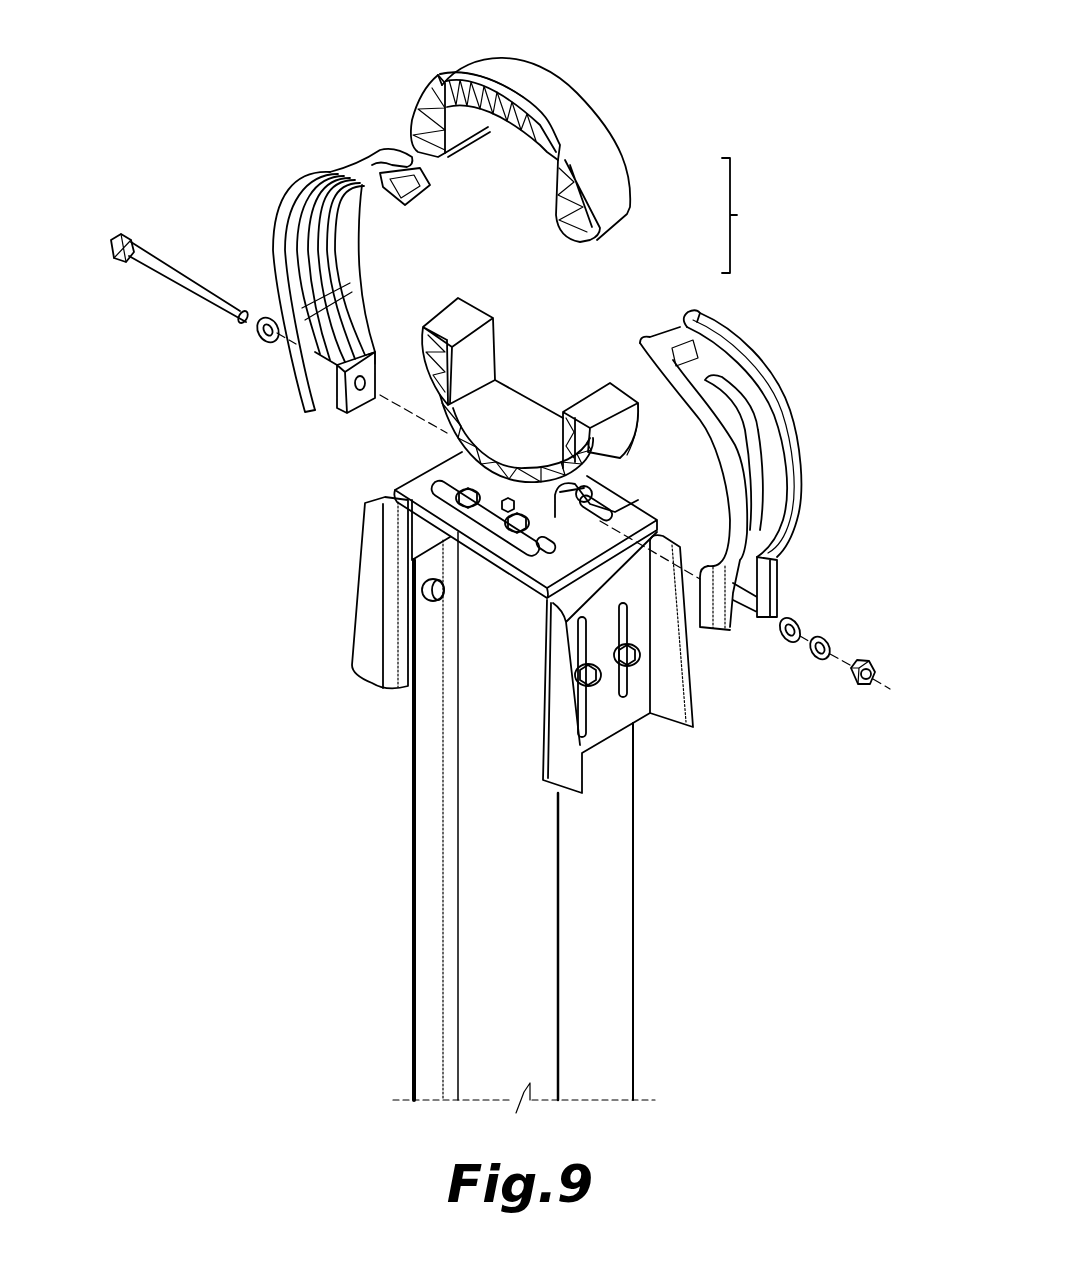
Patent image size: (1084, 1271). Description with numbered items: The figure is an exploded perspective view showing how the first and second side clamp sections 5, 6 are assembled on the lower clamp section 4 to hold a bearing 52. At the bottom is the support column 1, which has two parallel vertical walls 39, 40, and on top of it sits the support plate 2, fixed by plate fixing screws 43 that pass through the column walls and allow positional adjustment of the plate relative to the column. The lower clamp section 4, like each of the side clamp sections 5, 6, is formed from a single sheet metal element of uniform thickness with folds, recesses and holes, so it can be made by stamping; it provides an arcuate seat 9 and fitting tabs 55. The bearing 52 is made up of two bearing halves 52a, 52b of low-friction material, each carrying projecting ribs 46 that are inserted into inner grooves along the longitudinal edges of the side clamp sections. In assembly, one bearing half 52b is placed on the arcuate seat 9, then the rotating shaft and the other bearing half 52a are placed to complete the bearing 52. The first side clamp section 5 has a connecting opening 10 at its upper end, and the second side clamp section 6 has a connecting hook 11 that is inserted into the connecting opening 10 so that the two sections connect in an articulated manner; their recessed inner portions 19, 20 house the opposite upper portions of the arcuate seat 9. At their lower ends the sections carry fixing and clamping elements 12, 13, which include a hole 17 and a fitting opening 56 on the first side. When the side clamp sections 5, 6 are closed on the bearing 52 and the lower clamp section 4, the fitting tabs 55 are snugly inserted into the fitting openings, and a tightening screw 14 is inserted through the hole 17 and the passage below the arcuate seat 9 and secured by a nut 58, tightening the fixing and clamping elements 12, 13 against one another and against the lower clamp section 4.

The support column 1 is at (520, 905).
The support plate 2 is at (484, 622).
The lower clamp section 4 is at (499, 374).
The first side clamp section 5 is at (321, 275).
The second side clamp section 6 is at (764, 458).
The arcuate seat 9 is at (605, 472).
The connecting opening 10 is at (380, 165).
The connecting hook 11 is at (702, 320).
The fixing and clamping element 12 is at (373, 380).
The fixing and clamping element 13 is at (706, 568).
The tightening screw 14 is at (192, 287).
The hole 17 is at (363, 392).
The recessed inner portion 19 is at (323, 322).
The recessed inner portion 20 is at (778, 578).
The vertical wall 39 is at (430, 860).
The vertical wall 40 is at (612, 970).
The plate fixing screw 43 is at (422, 592).
The projecting rib 46 is at (505, 87).
The bearing 52 is at (595, 254).
The bearing half 52a is at (566, 254).
The bearing half 52b is at (512, 410).
The fitting tab 55 is at (477, 525).
The fitting opening 56 is at (343, 405).
The nut 58 is at (848, 687).